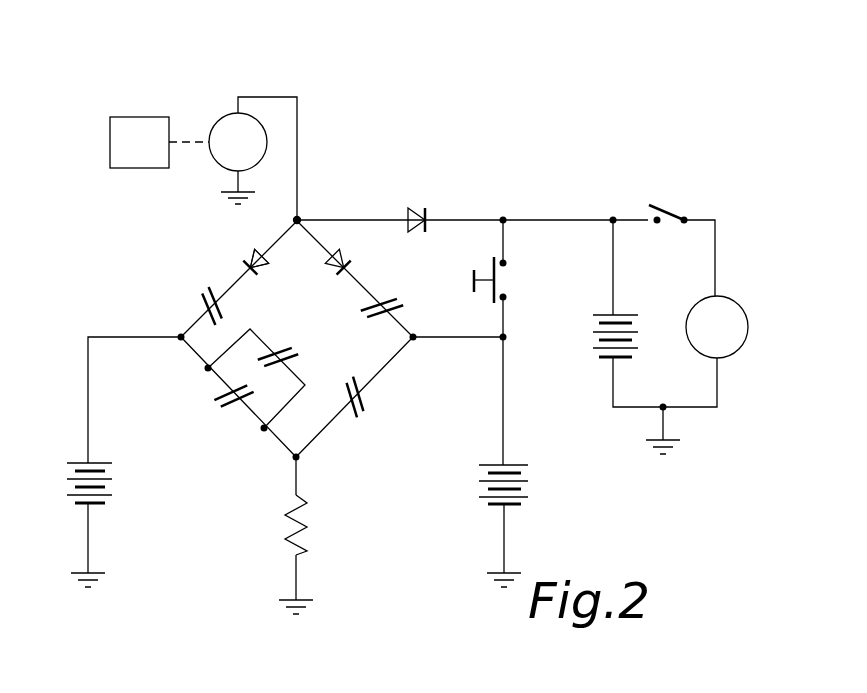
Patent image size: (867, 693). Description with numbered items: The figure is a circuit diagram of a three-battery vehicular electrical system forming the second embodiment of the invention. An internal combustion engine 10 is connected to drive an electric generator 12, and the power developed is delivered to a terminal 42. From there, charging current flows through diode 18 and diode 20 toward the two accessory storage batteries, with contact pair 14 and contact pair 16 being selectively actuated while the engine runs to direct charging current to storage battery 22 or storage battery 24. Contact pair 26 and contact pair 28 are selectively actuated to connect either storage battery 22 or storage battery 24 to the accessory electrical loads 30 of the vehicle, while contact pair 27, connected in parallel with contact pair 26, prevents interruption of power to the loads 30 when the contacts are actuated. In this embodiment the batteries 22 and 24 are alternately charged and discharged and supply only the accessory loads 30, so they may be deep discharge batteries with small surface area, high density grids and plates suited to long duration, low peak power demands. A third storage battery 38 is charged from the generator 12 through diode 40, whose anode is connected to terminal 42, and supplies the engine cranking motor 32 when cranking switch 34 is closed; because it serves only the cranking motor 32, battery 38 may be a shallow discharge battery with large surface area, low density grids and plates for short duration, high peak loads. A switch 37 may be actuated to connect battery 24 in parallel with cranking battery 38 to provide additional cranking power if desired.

The internal combustion engine 10 is at (147, 121).
The electric generator 12 is at (228, 122).
The contact pair 14 is at (207, 301).
The contact pair 16 is at (382, 316).
The diode 18 is at (254, 256).
The diode 20 is at (341, 253).
The storage battery 22 is at (105, 463).
The storage battery 24 is at (526, 465).
The contact pair 26 is at (226, 393).
The contact pair 27 is at (281, 348).
The contact pair 28 is at (365, 402).
The accessory electrical loads 30 is at (290, 522).
The engine cranking motor 32 is at (739, 305).
The cranking switch 34 is at (672, 213).
The switch 37 is at (480, 279).
The third storage battery 38 is at (594, 315).
The diode 40 is at (416, 209).
The terminal 42 is at (298, 220).